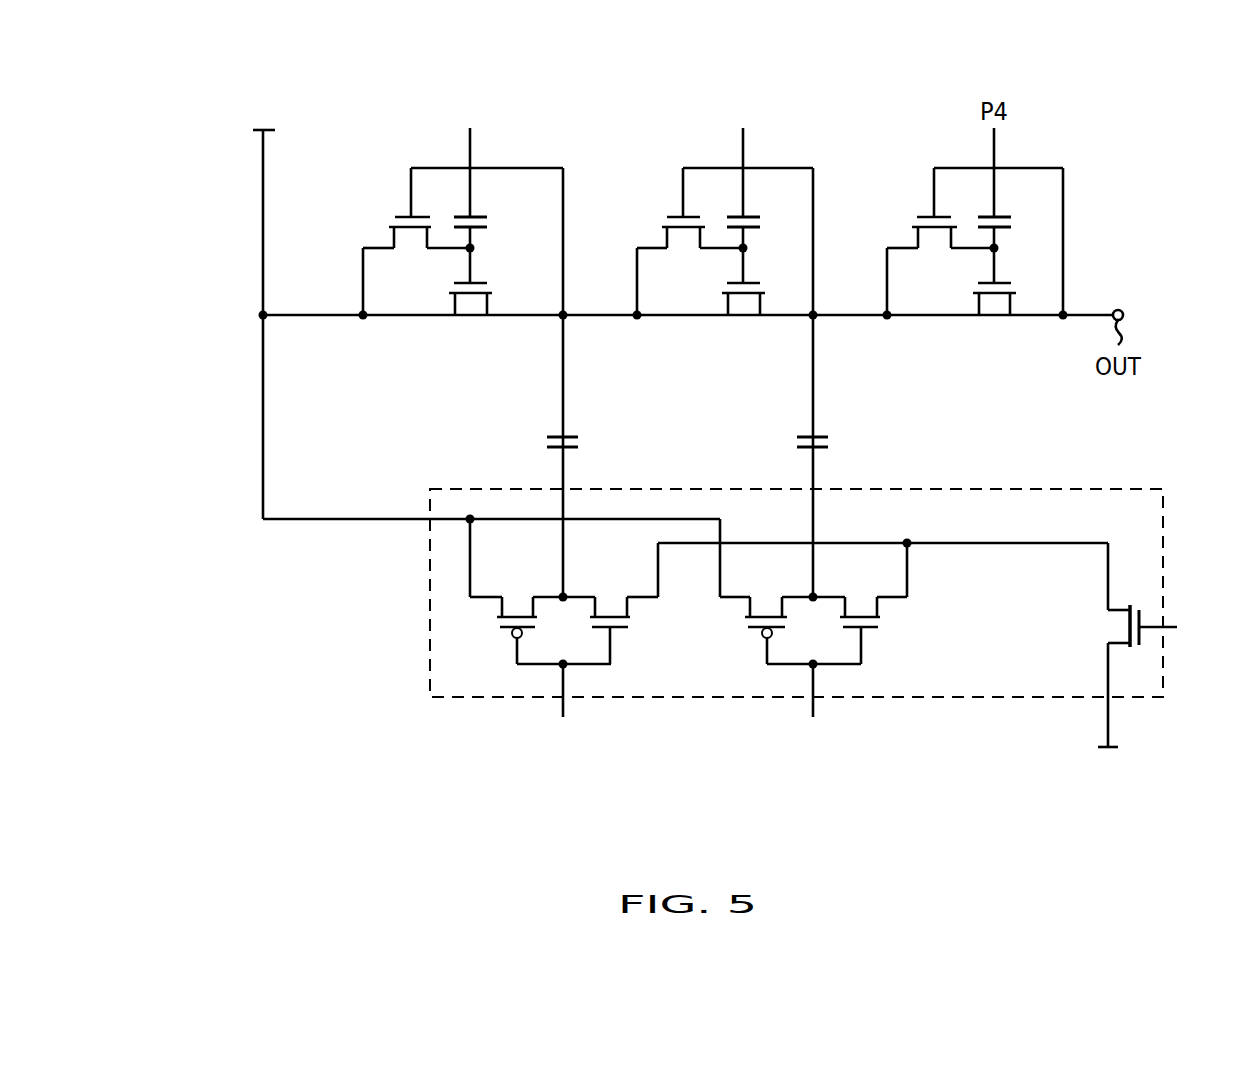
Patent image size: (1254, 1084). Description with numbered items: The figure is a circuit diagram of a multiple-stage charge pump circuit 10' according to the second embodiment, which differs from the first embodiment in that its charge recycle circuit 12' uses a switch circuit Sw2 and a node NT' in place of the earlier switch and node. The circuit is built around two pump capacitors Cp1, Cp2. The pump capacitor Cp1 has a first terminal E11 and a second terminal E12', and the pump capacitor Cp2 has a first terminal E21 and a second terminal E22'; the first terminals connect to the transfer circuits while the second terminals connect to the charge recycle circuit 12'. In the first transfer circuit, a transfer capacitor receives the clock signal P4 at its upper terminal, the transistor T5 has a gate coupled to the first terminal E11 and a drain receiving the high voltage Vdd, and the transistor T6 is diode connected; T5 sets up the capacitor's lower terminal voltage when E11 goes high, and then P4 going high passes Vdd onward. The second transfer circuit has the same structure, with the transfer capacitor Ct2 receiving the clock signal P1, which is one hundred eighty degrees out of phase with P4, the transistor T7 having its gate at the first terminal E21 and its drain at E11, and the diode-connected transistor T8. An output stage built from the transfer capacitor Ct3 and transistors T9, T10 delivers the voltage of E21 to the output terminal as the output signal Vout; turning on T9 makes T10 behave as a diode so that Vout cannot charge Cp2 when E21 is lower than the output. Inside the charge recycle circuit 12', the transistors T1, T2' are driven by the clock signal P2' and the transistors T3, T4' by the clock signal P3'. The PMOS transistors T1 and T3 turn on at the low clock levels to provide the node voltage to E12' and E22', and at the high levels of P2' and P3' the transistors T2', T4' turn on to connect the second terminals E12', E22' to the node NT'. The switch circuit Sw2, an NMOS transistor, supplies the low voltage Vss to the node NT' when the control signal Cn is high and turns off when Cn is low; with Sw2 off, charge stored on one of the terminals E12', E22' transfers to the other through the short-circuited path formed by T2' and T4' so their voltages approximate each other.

The multiple-stage charge pump circuit 10' is at (74, 107).
The charge recycle circuit 12' is at (796, 637).
The high voltage Vdd is at (264, 308).
The low voltage Vss is at (1109, 765).
The clock signal P1 is at (743, 157).
The clock signal P4 is at (470, 157).
The clock signal P2' is at (566, 708).
The clock signal P3' is at (816, 708).
The transistor T1 is at (554, 627).
The transistor T2' is at (610, 619).
The transistor T3 is at (803, 629).
The transistor T4' is at (861, 619).
The transistor T5 is at (416, 241).
The transistor T6 is at (470, 312).
The transistor T7 is at (690, 241).
The transistor T8 is at (743, 312).
The transistor T9 is at (940, 241).
The transistor T10 is at (994, 312).
The transfer capacitor Ct2 is at (767, 246).
The transfer capacitor Ct3 is at (1018, 246).
The pump capacitor Cp1 is at (586, 456).
The pump capacitor Cp2 is at (836, 456).
The first terminal E11 is at (575, 434).
The second terminal E12' is at (617, 468).
The first terminal E21 is at (825, 434).
The second terminal E22' is at (867, 468).
The node NT' is at (867, 542).
The switch circuit Sw2 is at (1108, 645).
The control signal Cn is at (1177, 628).
The output signal Vout is at (1118, 312).